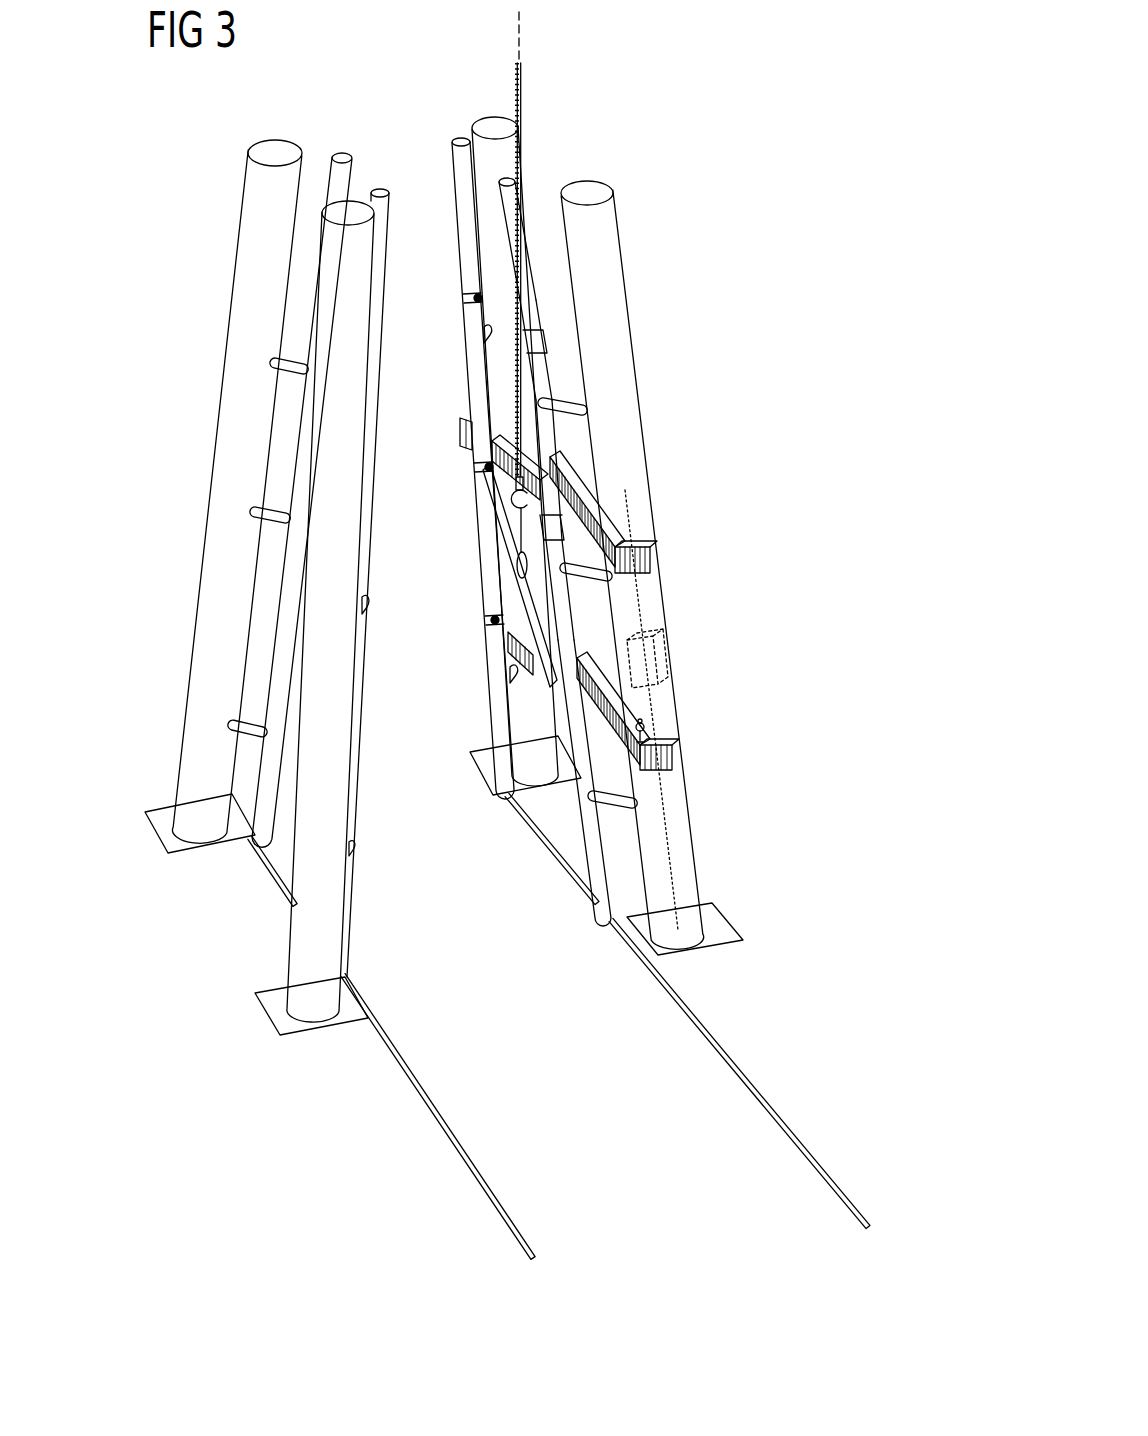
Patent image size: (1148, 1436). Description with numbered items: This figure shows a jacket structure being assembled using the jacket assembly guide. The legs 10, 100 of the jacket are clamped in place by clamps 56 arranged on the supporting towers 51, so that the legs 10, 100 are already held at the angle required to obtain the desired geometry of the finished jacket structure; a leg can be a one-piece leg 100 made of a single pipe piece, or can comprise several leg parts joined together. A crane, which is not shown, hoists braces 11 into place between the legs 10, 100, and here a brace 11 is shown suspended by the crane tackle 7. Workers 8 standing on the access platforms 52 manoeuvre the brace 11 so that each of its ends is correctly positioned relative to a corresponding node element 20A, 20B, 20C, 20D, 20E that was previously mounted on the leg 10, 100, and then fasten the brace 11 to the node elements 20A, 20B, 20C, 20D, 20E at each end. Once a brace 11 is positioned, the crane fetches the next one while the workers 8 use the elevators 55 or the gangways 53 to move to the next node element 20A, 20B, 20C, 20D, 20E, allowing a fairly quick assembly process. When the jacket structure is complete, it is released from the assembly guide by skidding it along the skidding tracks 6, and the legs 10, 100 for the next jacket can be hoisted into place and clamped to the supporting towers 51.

The supporting tower 51 is at (260, 208).
The crane tackle 7 is at (523, 95).
The leg 10 is at (588, 458).
The one-piece leg 100 is at (517, 262).
The node element 20A is at (528, 342).
The node element 20B is at (536, 350).
The node element 20C is at (549, 470).
The node element 20D is at (557, 577).
The node element 20E is at (584, 783).
The gangway 53 is at (572, 483).
The access platform 52 is at (648, 557).
The elevator 55 is at (657, 667).
The worker 8 is at (653, 728).
The clamp 56 is at (617, 807).
The brace 11 is at (508, 525).
The skidding track 6 is at (752, 1078).